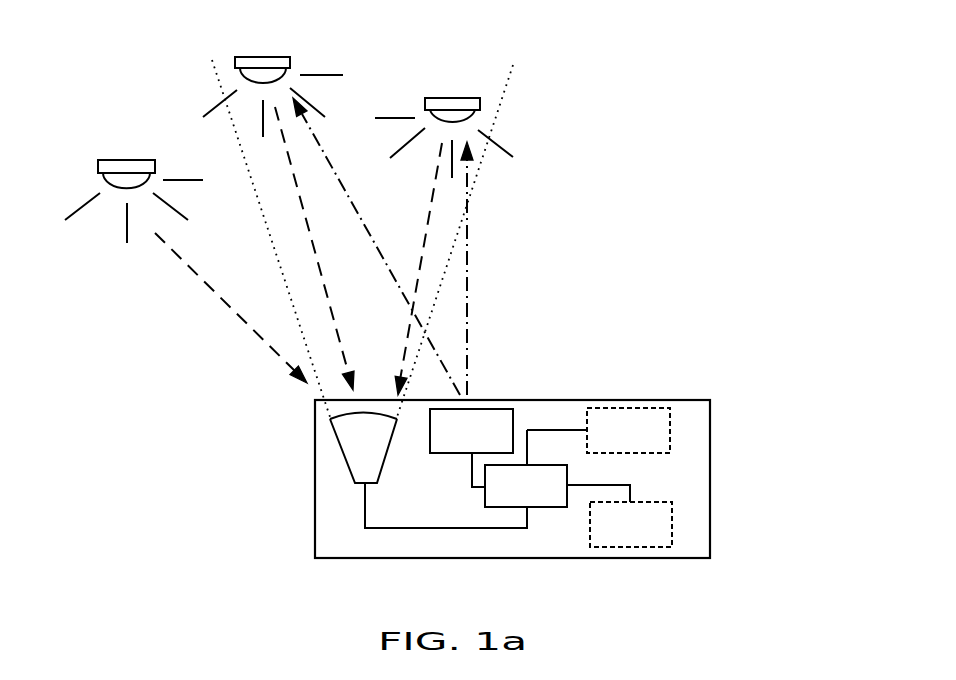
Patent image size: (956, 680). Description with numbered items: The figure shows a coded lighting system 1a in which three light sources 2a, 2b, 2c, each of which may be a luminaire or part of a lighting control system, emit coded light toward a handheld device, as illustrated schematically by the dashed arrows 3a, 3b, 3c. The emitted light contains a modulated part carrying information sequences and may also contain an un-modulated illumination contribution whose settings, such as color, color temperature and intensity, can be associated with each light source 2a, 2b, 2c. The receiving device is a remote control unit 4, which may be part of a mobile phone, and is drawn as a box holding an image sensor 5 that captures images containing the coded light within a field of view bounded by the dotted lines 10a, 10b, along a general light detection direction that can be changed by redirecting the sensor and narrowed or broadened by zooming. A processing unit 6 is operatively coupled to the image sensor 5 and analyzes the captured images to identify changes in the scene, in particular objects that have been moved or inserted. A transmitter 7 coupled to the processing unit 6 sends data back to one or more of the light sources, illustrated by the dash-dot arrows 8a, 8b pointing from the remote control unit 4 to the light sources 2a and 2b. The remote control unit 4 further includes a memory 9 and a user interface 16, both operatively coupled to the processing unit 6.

The lighting system 1a is at (692, 175).
The light source 2a is at (450, 98).
The light source 2b is at (260, 57).
The light source 2c is at (130, 160).
The coded light 3a is at (417, 277).
The coded light 3b is at (292, 158).
The coded light 3c is at (207, 283).
The remote control unit 4 is at (315, 480).
The image sensor 5 is at (348, 472).
The processing unit 6 is at (540, 498).
The transmitter 7 is at (472, 409).
The data transmission 8a is at (467, 248).
The data transmission 8b is at (323, 153).
The memory 9 is at (672, 522).
The field of view 10a is at (508, 80).
The field of view 10b is at (212, 65).
The user interface 16 is at (670, 430).